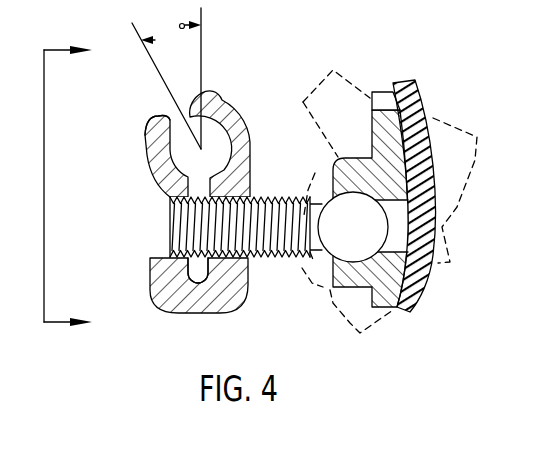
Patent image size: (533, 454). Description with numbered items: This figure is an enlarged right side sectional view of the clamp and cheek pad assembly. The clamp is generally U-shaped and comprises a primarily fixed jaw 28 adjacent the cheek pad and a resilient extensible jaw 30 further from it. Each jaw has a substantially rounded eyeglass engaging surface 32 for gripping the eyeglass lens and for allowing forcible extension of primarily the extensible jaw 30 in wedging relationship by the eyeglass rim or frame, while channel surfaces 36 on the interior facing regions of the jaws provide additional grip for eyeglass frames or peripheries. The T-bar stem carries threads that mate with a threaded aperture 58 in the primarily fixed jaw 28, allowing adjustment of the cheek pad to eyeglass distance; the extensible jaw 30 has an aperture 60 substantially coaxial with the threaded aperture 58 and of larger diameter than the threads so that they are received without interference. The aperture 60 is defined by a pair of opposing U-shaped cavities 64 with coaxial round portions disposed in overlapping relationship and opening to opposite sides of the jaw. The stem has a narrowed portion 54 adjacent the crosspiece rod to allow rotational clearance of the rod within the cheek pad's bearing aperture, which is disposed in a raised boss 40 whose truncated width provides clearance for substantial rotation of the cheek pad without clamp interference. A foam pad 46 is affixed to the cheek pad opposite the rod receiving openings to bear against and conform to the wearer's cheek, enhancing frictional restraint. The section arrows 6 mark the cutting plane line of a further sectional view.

The section line 6- 6 is at (76, 186).
The primarily fixed jaw 28 is at (231, 99).
The resilient extensible jaw 30 is at (145, 133).
The eyeglass engaging surface 32 is at (163, 115).
The channel surface 36 is at (230, 160).
The raised boss 40 is at (336, 293).
The foam pad 46 is at (424, 100).
The narrowed portion 54 is at (323, 262).
The threaded aperture 58 is at (232, 266).
The aperture 60 is at (172, 192).
The U-shaped cavities 64 is at (168, 258).